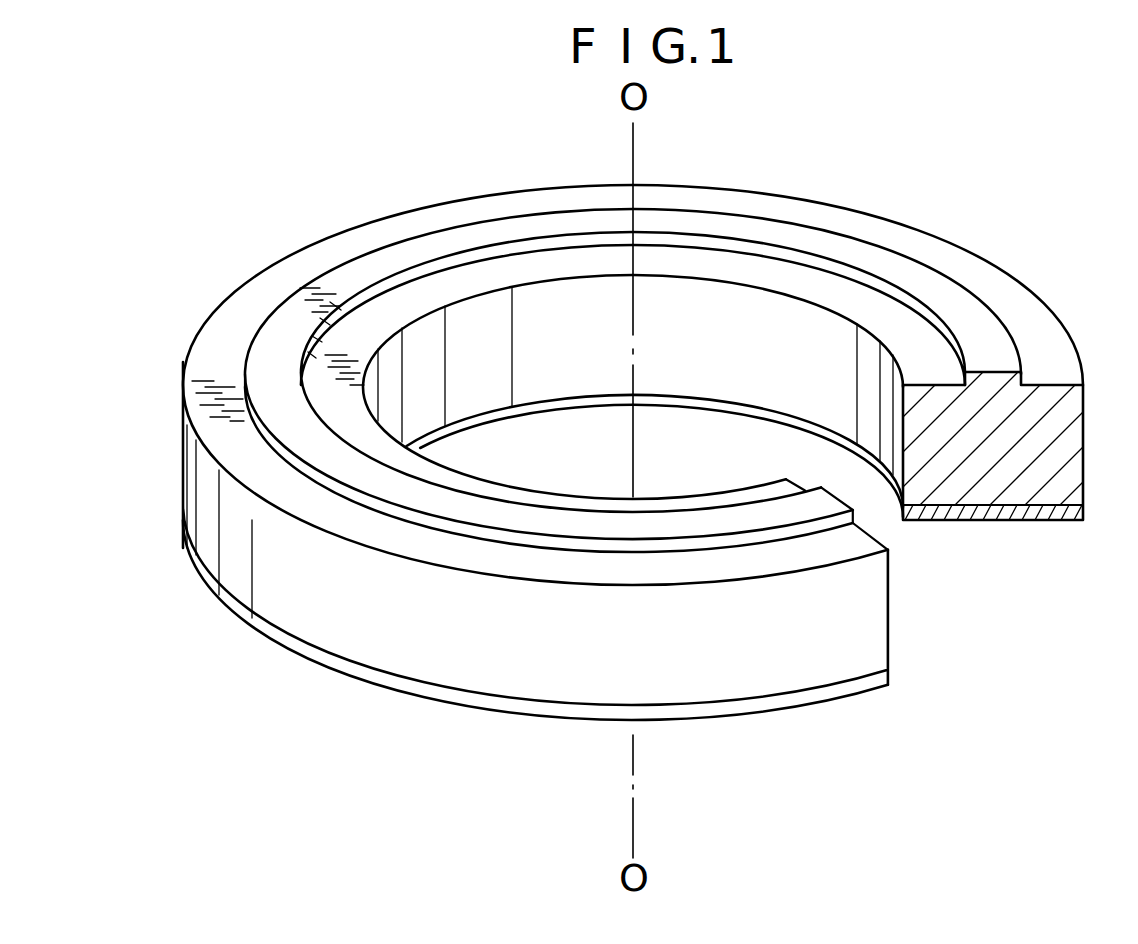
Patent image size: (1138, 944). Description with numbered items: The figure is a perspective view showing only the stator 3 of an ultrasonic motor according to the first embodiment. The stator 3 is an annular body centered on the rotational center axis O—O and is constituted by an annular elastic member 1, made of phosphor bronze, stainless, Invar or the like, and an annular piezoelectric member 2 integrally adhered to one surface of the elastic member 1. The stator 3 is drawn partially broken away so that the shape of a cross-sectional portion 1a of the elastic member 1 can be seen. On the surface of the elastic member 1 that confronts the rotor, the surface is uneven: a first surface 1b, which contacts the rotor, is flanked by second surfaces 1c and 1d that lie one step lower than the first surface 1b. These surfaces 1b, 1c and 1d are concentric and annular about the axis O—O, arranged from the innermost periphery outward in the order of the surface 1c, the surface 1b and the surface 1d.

The elastic member 1 is at (848, 623).
The cross-sectional portion 1a is at (1020, 480).
The first surface 1b is at (955, 290).
The second surface 1c is at (900, 337).
The second surface 1d is at (1035, 332).
The piezoelectric member 2 is at (862, 687).
The stator 3 is at (808, 172).